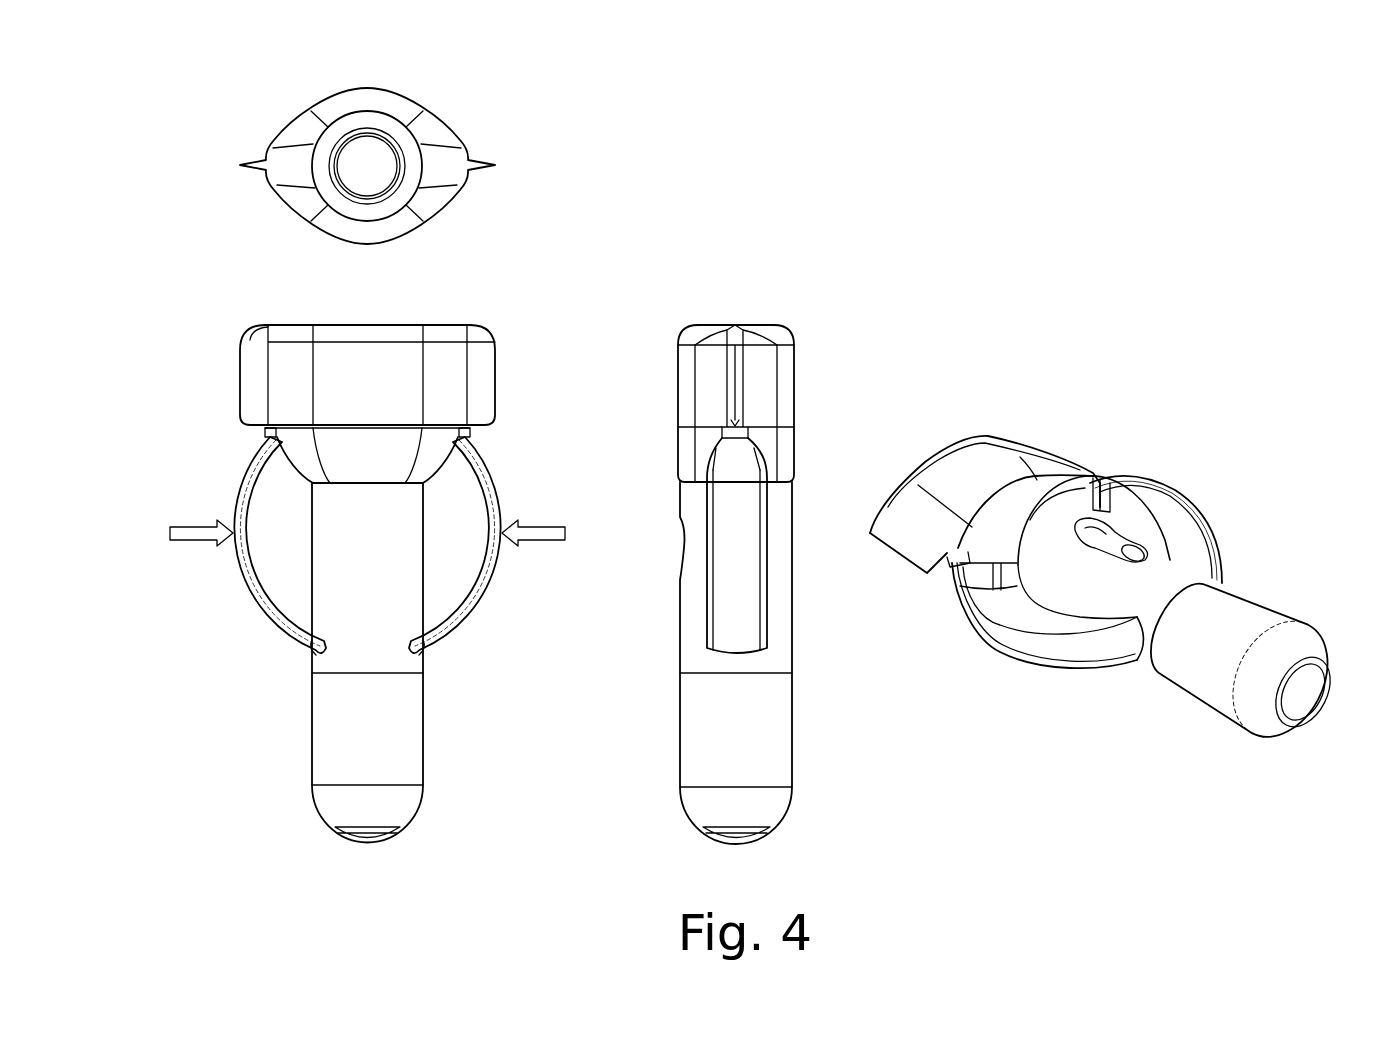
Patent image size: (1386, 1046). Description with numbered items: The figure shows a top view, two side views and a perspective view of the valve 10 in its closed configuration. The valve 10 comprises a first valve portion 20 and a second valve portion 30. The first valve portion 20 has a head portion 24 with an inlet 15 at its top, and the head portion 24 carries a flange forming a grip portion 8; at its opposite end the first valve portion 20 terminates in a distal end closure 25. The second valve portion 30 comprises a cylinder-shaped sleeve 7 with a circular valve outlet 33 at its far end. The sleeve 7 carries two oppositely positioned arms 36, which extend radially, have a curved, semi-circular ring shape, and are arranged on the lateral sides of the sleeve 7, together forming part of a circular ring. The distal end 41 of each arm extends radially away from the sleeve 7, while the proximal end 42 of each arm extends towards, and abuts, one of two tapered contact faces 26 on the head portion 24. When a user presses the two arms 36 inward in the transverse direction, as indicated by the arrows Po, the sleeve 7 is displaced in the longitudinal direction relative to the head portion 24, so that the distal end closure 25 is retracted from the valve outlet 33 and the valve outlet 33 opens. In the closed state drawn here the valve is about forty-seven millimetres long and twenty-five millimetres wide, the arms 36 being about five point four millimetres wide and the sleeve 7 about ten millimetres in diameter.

The grip portion 8 is at (262, 158).
The head portion 24 is at (318, 135).
The inlet 15 is at (378, 163).
The valve 10 is at (204, 298).
The first valve portion 20 is at (350, 357).
The tapered contact faces 26 is at (470, 470).
The proximal end of the arms 42 is at (470, 440).
The arms 36 is at (240, 570).
The distal end of the arms 41 is at (305, 652).
The sleeve 7 is at (390, 655).
The second valve portion 30 is at (335, 745).
The valve outlet 33 is at (1275, 700).
The distal end closure 25 is at (1303, 690).
The pressure arrows Po is at (368, 531).